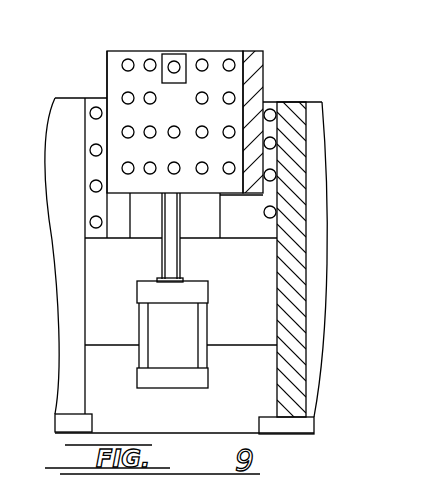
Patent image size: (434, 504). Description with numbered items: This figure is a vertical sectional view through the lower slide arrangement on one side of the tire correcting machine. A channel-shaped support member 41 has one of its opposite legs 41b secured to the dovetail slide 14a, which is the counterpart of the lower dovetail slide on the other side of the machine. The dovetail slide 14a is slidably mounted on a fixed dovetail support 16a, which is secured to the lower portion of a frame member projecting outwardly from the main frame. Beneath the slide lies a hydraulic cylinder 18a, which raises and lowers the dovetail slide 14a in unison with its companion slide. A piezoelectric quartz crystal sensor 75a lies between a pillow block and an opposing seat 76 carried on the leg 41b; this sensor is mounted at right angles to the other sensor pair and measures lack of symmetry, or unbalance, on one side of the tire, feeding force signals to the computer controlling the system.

The dovetail slide 14a is at (136, 56).
The seat 76 is at (187, 55).
The piezoelectric quartz crystal sensor 75a is at (178, 70).
The channel-shaped support member 41 is at (257, 86).
The leg 41b is at (112, 75).
The fixed dovetail support 16a is at (240, 223).
The hydraulic cylinder 18a is at (188, 317).